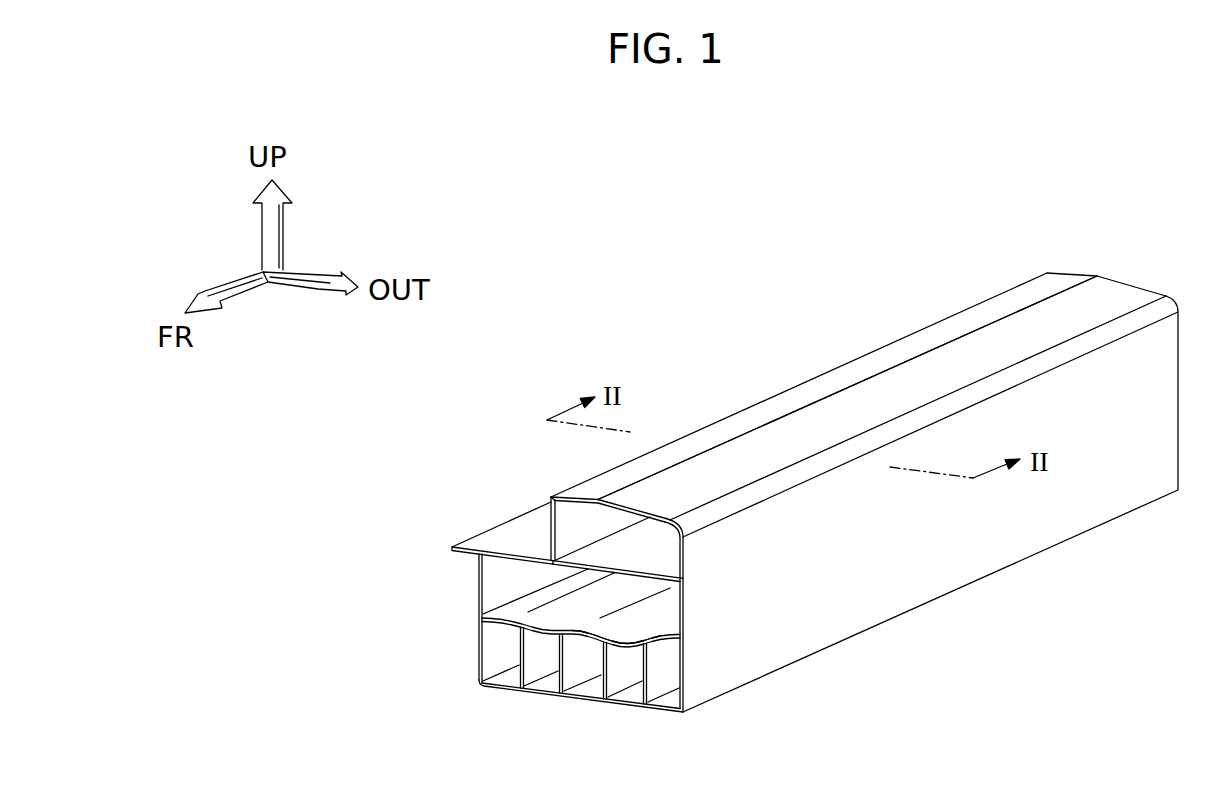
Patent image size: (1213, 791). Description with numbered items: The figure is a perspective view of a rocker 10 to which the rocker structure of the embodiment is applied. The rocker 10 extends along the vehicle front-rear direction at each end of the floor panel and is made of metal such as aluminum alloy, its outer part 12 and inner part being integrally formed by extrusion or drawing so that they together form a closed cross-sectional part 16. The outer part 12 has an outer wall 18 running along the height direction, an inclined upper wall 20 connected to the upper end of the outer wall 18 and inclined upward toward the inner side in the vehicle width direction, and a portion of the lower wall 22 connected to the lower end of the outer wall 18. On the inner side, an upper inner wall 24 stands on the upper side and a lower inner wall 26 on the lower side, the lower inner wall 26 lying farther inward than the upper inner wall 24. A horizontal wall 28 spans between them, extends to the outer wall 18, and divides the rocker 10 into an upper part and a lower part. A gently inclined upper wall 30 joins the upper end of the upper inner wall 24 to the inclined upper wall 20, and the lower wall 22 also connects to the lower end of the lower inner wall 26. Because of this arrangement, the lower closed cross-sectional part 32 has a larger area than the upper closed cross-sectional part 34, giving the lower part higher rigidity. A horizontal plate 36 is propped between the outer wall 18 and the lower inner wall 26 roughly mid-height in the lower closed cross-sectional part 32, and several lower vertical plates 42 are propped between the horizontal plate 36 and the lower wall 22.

The rocker 10 is at (791, 503).
The outer part 12 is at (864, 490).
The closed cross-sectional part 16 is at (655, 582).
The outer wall 18 is at (913, 585).
The inclined upper wall 20 is at (798, 450).
The lower wall 22 is at (573, 705).
The upper inner wall 24 is at (550, 532).
The lower inner wall 26 is at (481, 638).
The horizontal wall 28 is at (495, 540).
The inclined upper wall 30 is at (723, 428).
The lower closed cross-sectional part 32 is at (655, 602).
The upper closed cross-sectional part 34 is at (820, 556).
The horizontal plate 36 is at (633, 637).
The lower vertical plates 42 is at (573, 672).